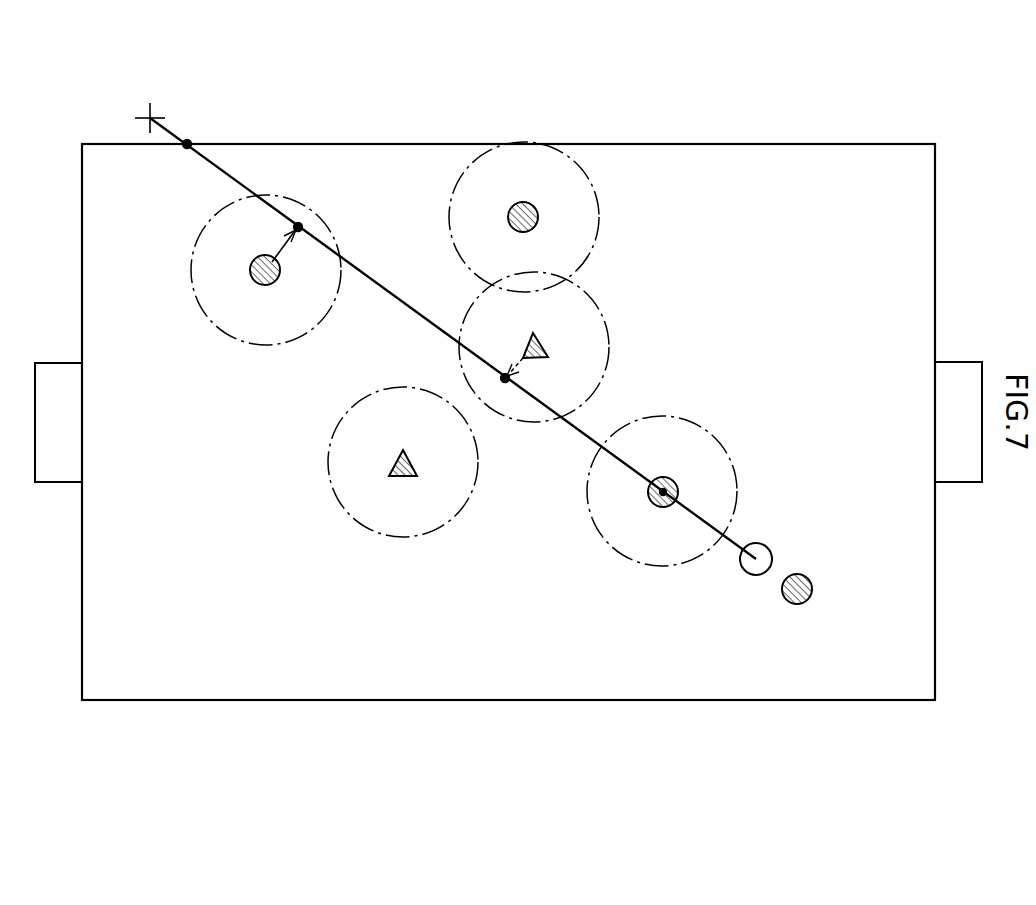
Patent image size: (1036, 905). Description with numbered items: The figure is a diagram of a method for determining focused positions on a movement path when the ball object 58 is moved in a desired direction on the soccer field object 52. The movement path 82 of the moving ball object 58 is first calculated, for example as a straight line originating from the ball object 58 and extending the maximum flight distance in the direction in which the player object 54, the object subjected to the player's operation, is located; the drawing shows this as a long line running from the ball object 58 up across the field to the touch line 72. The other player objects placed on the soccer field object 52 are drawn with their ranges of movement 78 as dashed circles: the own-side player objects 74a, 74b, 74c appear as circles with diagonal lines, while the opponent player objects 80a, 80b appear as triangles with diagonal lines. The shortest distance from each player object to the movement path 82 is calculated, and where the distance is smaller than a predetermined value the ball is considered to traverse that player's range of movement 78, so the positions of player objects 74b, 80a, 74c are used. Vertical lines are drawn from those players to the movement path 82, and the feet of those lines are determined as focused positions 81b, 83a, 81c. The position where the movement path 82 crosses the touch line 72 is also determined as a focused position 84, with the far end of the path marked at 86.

The soccer field object 52 is at (255, 658).
The player object 54 is at (813, 589).
The ball object 58 is at (757, 576).
The touch line 72 is at (766, 143).
The player object 74a is at (537, 211).
The player object 74b is at (680, 490).
The player object 74c is at (262, 285).
The range of movement 78 is at (598, 245).
The player object 80a is at (545, 345).
The player object 80b is at (418, 462).
The focused position 81b is at (662, 497).
The focused position 81c is at (300, 227).
The movement path 82 is at (400, 312).
The focused position 83a is at (500, 377).
The focused position 84 is at (188, 144).
The start point 86 is at (163, 102).